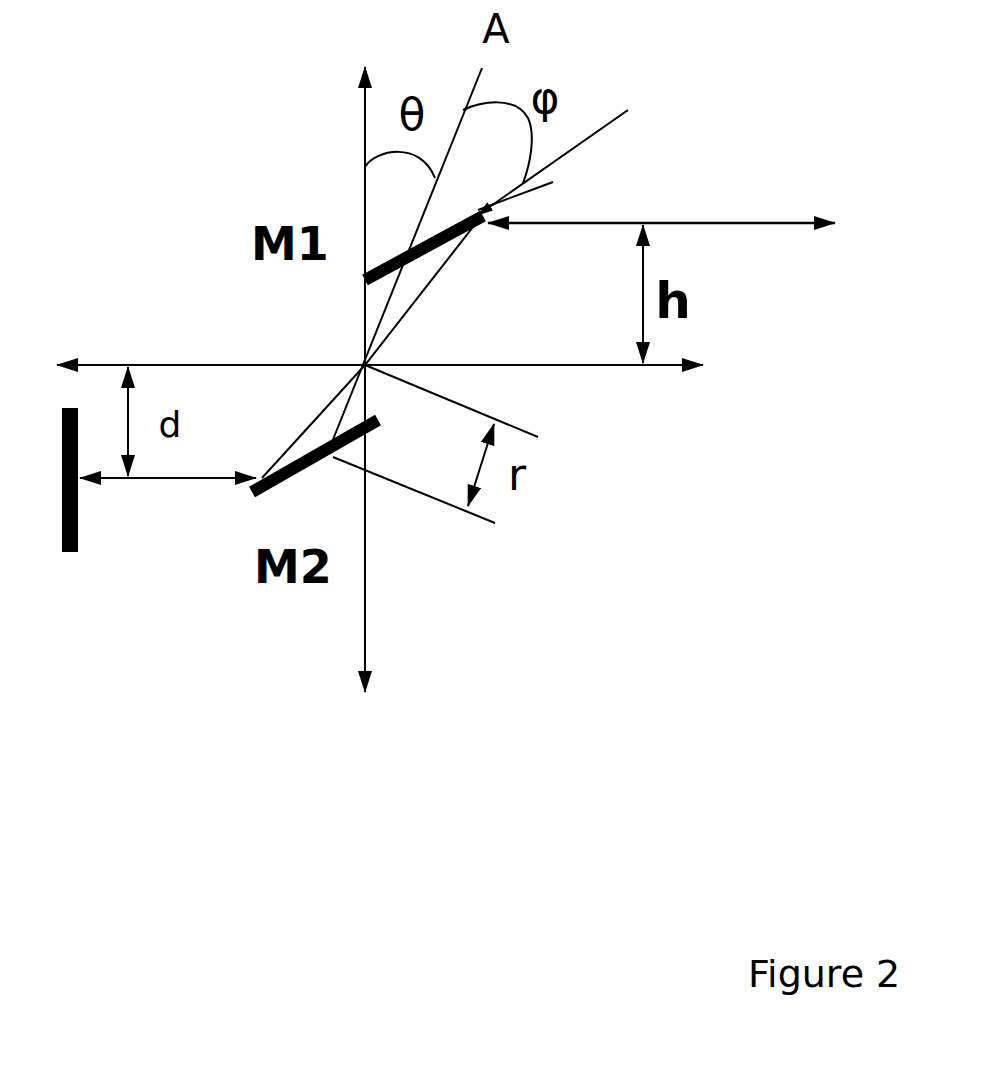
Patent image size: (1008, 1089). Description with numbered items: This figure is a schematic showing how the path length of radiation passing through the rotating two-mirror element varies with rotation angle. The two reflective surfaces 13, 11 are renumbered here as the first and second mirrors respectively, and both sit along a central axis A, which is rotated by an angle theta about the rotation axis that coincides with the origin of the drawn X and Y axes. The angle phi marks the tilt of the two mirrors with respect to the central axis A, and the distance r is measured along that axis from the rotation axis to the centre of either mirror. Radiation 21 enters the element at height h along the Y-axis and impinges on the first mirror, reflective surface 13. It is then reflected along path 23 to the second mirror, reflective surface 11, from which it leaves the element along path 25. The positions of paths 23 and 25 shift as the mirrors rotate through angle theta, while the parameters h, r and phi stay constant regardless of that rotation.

The reflective surface 11 is at (339, 466).
The reflective surface 13 is at (568, 148).
The radiation 21 is at (706, 202).
The path 23 is at (441, 296).
The path 25 is at (158, 483).